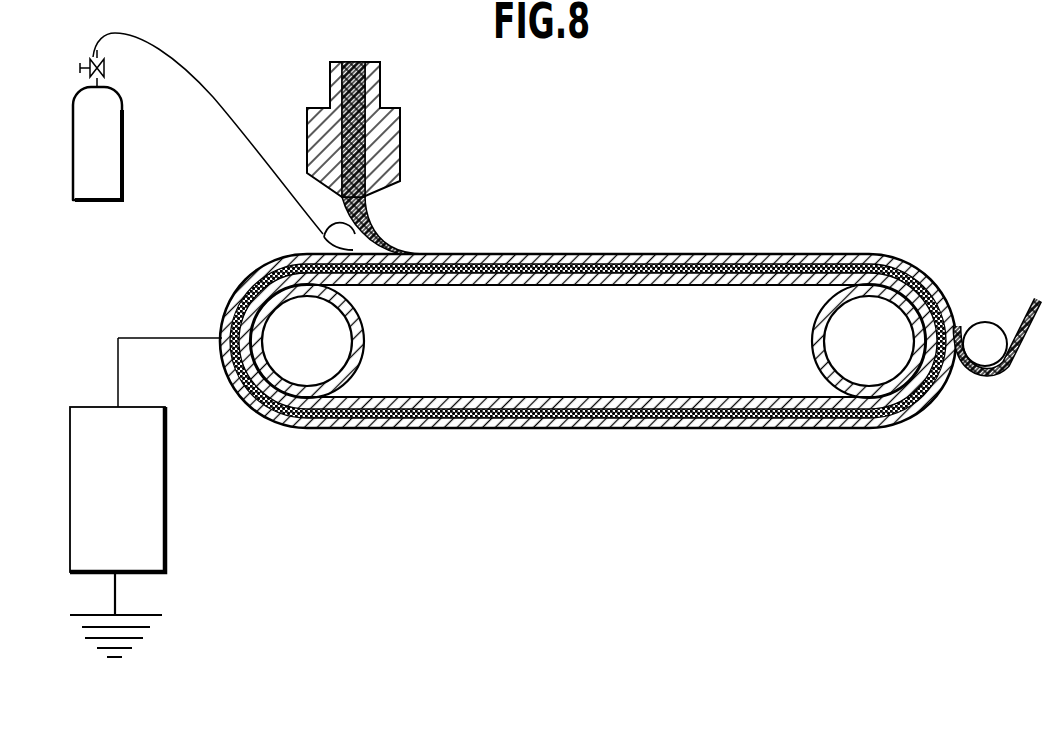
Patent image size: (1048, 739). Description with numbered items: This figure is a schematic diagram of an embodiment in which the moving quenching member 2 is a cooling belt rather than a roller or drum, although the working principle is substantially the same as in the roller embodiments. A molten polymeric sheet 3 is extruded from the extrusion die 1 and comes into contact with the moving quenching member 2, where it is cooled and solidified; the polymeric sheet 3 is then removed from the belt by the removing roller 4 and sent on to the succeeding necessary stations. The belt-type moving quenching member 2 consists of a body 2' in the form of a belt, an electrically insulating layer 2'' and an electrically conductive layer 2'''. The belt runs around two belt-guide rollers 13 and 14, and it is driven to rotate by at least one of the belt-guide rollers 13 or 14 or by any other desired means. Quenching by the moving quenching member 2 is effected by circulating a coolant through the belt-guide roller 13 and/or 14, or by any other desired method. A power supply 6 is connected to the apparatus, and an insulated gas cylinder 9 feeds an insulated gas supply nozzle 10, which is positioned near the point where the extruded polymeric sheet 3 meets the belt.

The extrusion die 1 is at (400, 117).
The moving quenching member 2 is at (588, 380).
The body 2' is at (588, 378).
The electrically insulating layer 2'' is at (588, 385).
The electrically conductive layer 2''' is at (588, 377).
The polymeric sheet 3 is at (562, 253).
The removing roller 4 is at (987, 321).
The power supply 6 is at (165, 505).
The insulated gas cylinder 9 is at (122, 141).
The insulated gas supply nozzle 10 is at (324, 238).
The belt-guide roller 13 is at (363, 324).
The belt-guide roller 14 is at (812, 344).